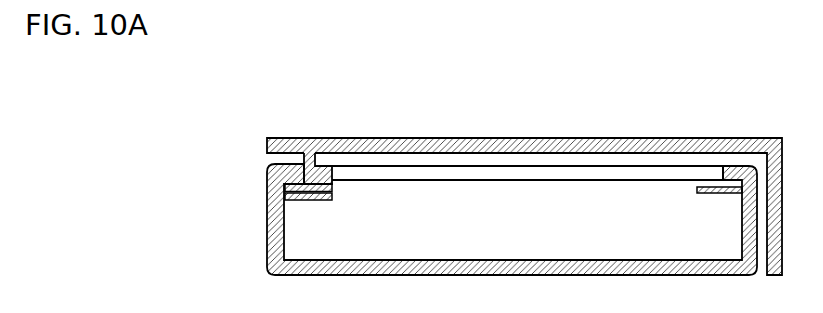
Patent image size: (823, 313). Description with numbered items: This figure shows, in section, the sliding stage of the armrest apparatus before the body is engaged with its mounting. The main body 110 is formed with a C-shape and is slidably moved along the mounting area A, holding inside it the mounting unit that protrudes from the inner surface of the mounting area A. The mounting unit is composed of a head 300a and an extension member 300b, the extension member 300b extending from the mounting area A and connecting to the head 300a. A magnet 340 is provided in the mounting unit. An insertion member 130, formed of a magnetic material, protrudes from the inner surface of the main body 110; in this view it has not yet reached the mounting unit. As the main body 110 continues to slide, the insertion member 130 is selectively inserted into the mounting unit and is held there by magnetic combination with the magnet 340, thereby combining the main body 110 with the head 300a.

The main body 110 is at (279, 218).
The insertion member 130 is at (712, 189).
The head 300a is at (333, 185).
The extension member 300b is at (315, 166).
The magnet 340 is at (285, 178).
The mounting area A is at (463, 158).